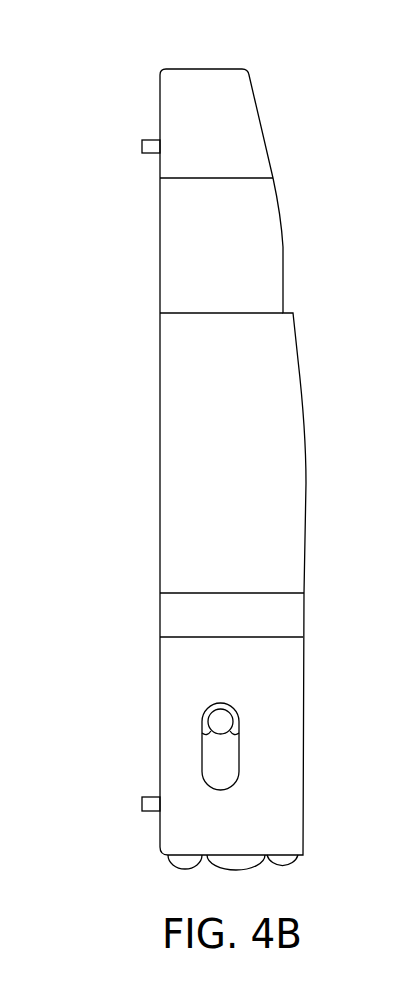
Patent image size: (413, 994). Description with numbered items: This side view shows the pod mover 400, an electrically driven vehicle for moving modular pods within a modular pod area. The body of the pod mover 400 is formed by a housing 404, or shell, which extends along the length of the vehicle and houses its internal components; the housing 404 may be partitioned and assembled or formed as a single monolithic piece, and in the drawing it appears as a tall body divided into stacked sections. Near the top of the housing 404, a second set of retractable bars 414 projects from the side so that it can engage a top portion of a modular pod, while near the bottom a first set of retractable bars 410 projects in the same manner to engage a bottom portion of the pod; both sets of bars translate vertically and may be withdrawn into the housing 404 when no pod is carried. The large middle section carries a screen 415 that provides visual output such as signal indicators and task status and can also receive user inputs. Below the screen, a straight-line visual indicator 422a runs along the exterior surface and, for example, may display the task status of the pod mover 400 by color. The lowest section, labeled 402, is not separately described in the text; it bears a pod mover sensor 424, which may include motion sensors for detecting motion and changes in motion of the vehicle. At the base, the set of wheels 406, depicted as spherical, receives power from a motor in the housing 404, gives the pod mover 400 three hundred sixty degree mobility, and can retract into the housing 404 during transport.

The pod mover 400 is at (196, 54).
The second set of retractable bars 414 is at (146, 140).
The housing 404 is at (160, 232).
The screen 415 is at (168, 398).
The visual indicator 422a is at (174, 637).
The base housing section 402 is at (160, 720).
The pod mover sensor 424 is at (240, 722).
The first set of retractable bars 410 is at (143, 797).
The set of wheels 406 is at (170, 862).